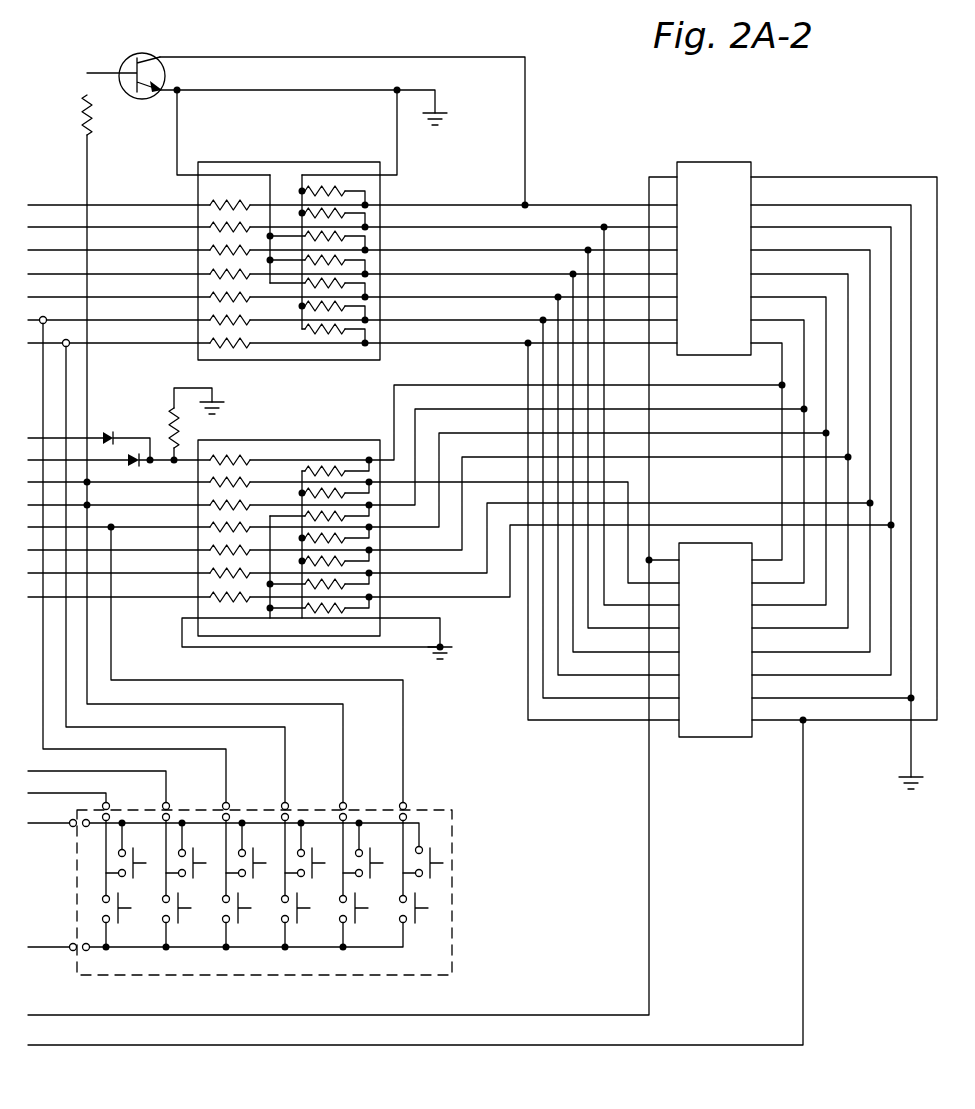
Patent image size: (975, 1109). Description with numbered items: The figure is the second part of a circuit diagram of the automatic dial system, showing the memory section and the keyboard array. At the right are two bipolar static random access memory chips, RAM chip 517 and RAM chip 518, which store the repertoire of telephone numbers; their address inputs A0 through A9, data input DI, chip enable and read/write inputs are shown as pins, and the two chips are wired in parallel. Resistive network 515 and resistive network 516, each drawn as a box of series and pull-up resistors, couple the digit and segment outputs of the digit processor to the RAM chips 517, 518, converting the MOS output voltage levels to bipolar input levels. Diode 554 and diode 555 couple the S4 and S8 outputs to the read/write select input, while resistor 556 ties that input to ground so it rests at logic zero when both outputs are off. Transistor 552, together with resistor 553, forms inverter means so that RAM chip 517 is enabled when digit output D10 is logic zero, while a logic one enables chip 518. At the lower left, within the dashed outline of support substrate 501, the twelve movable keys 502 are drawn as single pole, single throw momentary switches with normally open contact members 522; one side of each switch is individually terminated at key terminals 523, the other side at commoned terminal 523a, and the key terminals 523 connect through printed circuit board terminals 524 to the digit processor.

The support substrate 501 is at (452, 823).
The movable keys 502 is at (270, 884).
The resistive network 515 is at (257, 162).
The resistive network 516 is at (263, 440).
The RAM chip 517 is at (697, 162).
The RAM chip 518 is at (703, 737).
The contact members 522 is at (102, 919).
The key terminals 523 is at (163, 804).
The commoned terminal 523a is at (83, 821).
The printed circuit board terminals 524 is at (223, 805).
The transistor 552 is at (148, 53).
The resistor 553 is at (88, 135).
The diode 554 is at (105, 434).
The diode 555 is at (134, 453).
The resistor 556 is at (172, 408).